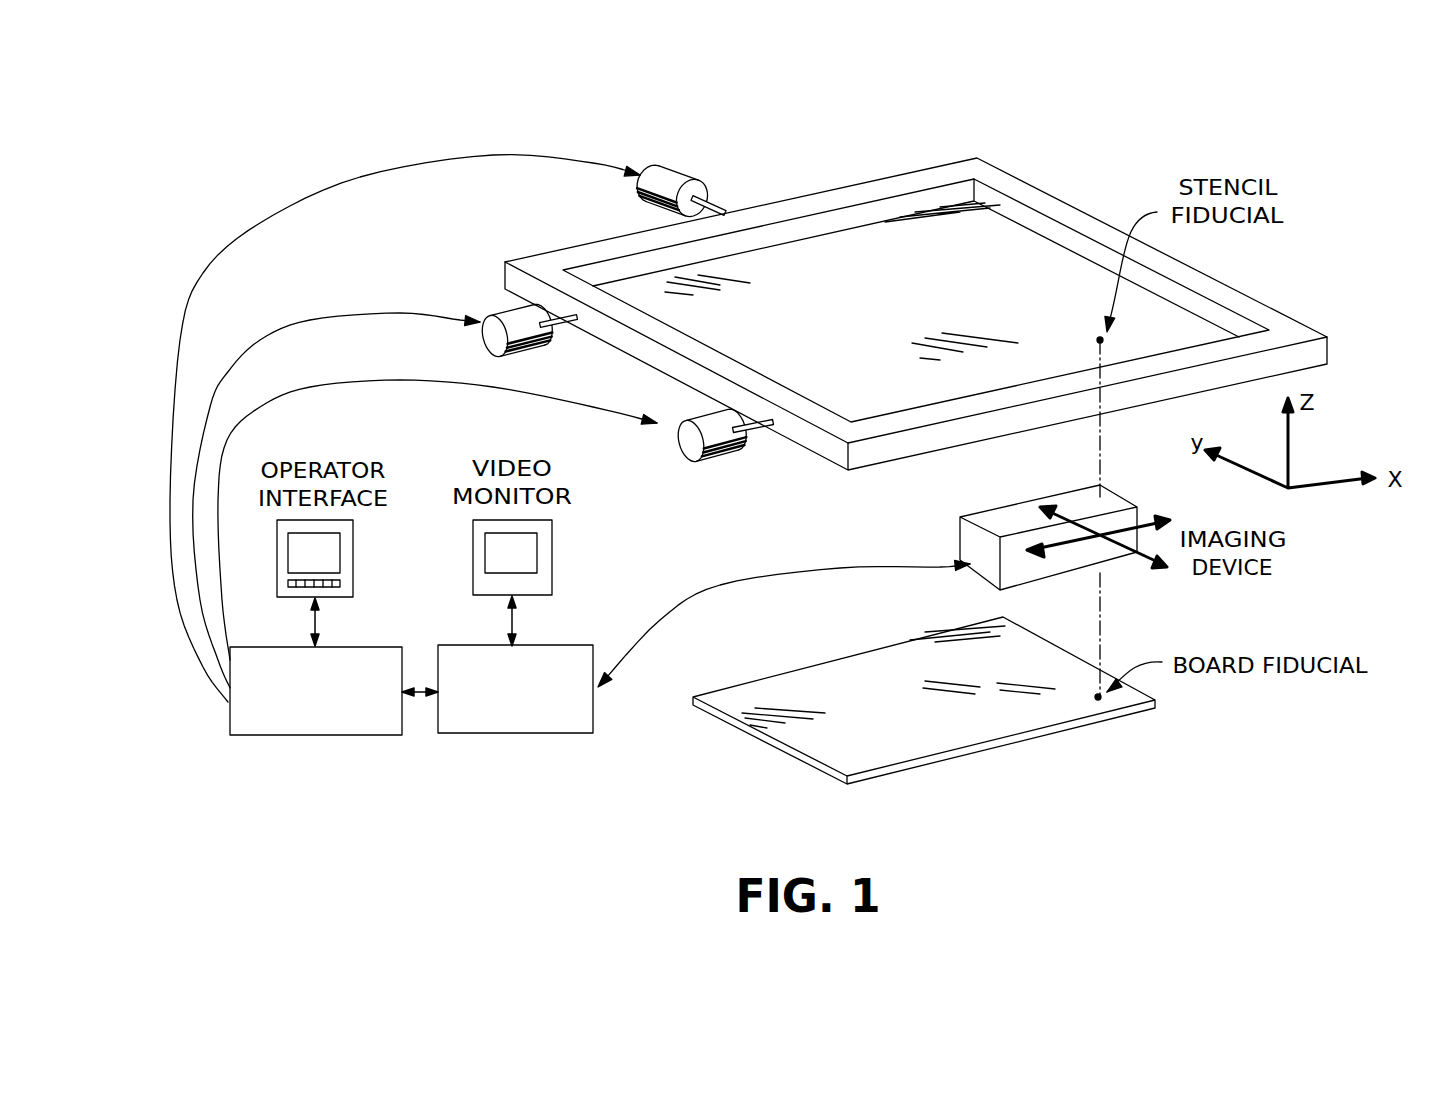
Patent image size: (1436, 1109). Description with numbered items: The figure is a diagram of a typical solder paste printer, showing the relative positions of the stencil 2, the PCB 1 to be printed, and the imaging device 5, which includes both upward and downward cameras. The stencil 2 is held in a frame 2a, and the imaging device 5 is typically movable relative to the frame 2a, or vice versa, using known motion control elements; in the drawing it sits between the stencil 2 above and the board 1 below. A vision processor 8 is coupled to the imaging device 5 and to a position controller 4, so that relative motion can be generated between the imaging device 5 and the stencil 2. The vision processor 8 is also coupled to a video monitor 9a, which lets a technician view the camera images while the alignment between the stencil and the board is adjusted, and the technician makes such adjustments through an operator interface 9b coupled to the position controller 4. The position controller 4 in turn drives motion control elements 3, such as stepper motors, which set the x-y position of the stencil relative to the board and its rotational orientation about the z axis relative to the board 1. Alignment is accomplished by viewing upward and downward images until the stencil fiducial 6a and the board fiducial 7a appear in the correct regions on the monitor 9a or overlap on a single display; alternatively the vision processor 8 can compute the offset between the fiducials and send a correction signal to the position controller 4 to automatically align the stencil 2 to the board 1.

The PCB 1 is at (775, 753).
The stencil 2 is at (807, 250).
The frame 2a is at (1028, 195).
The motion control elements 3 is at (672, 177).
The position controller 4 is at (337, 735).
The imaging device 5 is at (957, 530).
The stencil fiducial 6a is at (1098, 340).
The board fiducial 7a is at (1098, 700).
The vision processor 8 is at (533, 733).
The video monitor 9a is at (537, 560).
The operator interface 9b is at (340, 562).